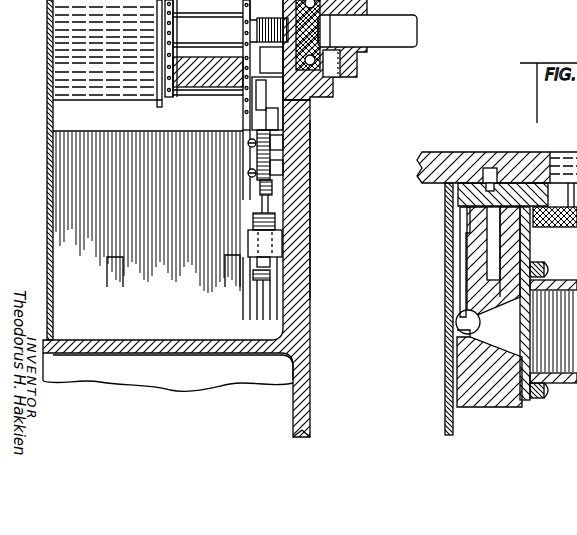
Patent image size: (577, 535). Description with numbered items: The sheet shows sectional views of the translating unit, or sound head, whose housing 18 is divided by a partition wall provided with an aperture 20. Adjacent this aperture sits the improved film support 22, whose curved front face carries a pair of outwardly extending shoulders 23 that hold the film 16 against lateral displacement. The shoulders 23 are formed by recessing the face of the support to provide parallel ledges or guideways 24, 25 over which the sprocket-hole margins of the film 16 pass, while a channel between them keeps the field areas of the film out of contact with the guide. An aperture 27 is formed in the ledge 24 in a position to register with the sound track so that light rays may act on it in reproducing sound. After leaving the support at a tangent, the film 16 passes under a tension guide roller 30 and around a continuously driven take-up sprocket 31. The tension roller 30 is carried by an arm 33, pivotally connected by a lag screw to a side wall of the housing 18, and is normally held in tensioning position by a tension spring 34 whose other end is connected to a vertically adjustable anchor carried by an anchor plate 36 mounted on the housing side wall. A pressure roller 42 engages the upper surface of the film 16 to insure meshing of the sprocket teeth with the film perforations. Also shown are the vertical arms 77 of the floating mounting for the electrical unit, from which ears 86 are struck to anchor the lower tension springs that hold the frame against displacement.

In FIG. 3, the pressure roller 42 is at (144, 0).
In FIG. 3, the take-up sprocket 31 is at (157, 30).
In FIG. 3, the tension guide roller 30 is at (158, 98).
In FIG. 3, the film 16 is at (222, 0).
In FIG. 7, the film 16 is at (467, 282).
In FIG. 3, the arm 33 is at (250, 68).
In FIG. 3, the housing 18 is at (299, 153).
In FIG. 3, the tension spring 34 is at (272, 190).
In FIG. 3, the anchor plate 36 is at (240, 245).
In FIG. 3, the vertical arms 77 is at (148, 212).
In FIG. 3, the ears 86 is at (225, 266).
In FIG. 7, the film support 22 is at (503, 408).
In FIG. 7, the aperture 20 is at (443, 330).
In FIG. 7, the aperture 27 is at (456, 318).
In FIG. 7, the shoulders 23 is at (463, 226).
In FIG. 7, the guideway 25 is at (463, 233).
In FIG. 7, the guideway 24 is at (465, 357).